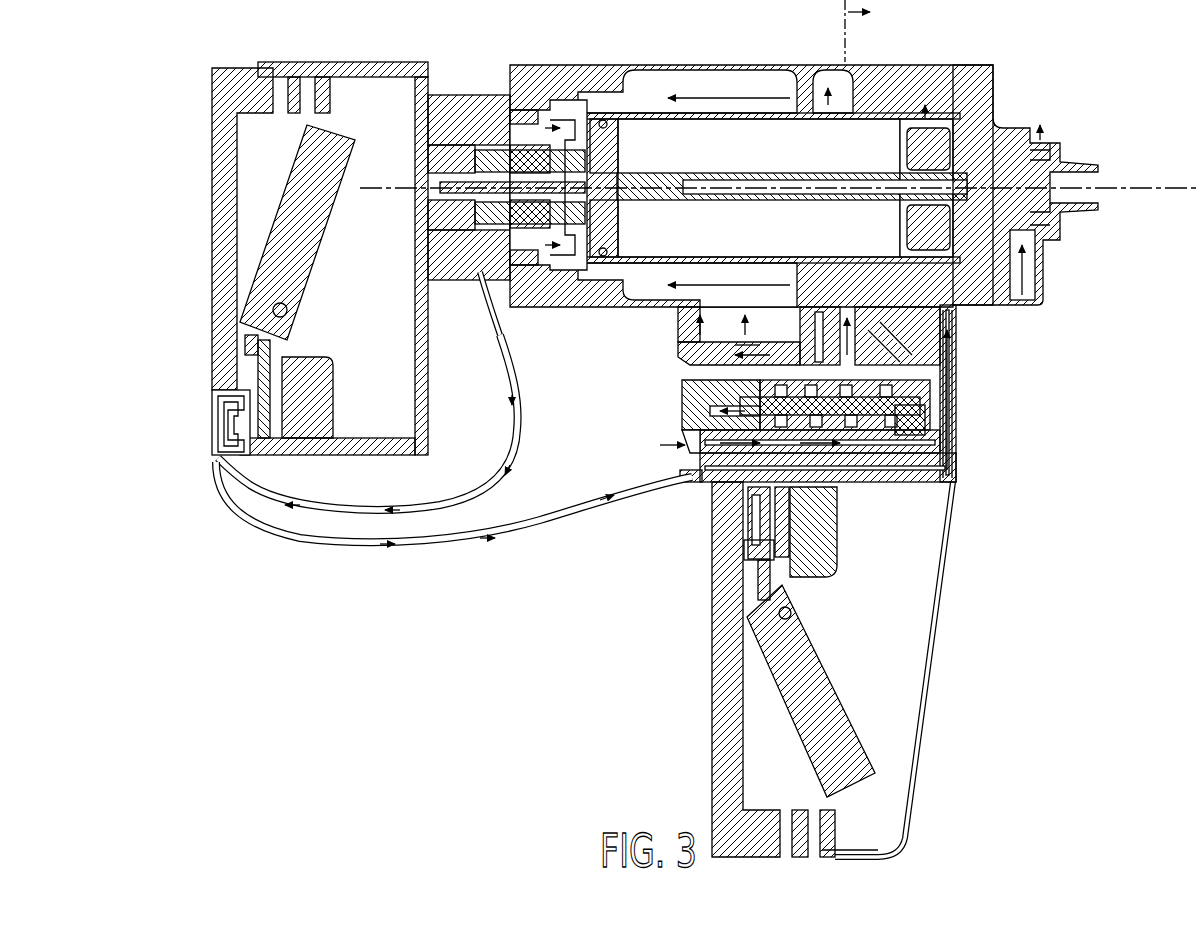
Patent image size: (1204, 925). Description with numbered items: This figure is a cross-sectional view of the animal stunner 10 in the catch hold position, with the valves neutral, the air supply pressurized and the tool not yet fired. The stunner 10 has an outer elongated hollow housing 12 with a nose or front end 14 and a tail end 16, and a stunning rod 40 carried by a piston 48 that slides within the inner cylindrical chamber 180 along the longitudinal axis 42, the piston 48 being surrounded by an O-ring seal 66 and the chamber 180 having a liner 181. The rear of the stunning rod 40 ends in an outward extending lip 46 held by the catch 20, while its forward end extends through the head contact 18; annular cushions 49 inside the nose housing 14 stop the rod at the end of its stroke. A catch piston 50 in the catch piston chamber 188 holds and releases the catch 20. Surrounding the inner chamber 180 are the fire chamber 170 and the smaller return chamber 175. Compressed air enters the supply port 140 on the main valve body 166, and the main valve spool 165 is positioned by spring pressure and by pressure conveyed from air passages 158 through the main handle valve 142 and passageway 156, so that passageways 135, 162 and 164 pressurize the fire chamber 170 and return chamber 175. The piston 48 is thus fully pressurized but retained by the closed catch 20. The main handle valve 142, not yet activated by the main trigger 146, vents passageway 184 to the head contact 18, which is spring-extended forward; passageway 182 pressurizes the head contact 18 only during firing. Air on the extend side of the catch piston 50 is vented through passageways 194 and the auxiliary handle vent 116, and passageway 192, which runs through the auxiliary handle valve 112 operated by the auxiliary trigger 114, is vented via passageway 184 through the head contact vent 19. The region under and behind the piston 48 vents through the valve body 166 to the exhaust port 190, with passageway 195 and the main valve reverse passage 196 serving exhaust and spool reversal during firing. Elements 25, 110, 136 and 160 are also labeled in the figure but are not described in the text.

The animal stunner 10 is at (1128, 100).
The outer elongated hollow housing 12 is at (735, 63).
The outer housing nose 14 is at (993, 90).
The tail end 16 is at (462, 95).
The head contact 18 is at (1084, 226).
The head contact vent 19 is at (1062, 148).
The catch 20 is at (465, 155).
The section line 25 is at (871, 31).
The stunning rod 40 is at (755, 172).
The longitudinal axis 42 is at (408, 196).
The stunning rod lip 46 is at (560, 179).
The piston 48 is at (618, 150).
The annular cushions 49 is at (920, 126).
The catch piston 50 is at (505, 110).
The O-ring seal 66 is at (603, 119).
The rear magazine housing 110 is at (208, 262).
The auxiliary handle valve 112 is at (270, 432).
The auxiliary trigger 114 is at (305, 272).
The auxiliary handle vent 116 is at (240, 425).
The passageway 135 is at (820, 455).
The handle 136 is at (718, 718).
The supply port 140 is at (692, 440).
The main handle valve 142 is at (792, 598).
The main trigger 146 is at (850, 700).
The passageway 156 is at (745, 490).
The air passages 158 is at (740, 512).
The trigger valve body 160 is at (745, 532).
The passageway 162 is at (855, 318).
The passageway 164 is at (905, 322).
The main valve spool 165 is at (940, 432).
The main valve body 166 is at (688, 393).
The fire chamber 170 is at (695, 76).
The return chamber 175 is at (825, 72).
The inner cylindrical chamber 180 is at (710, 159).
The liner 181 is at (812, 180).
The passageway 182 is at (935, 415).
The passageway 184 is at (905, 484).
The catch piston chamber 188 is at (481, 282).
The exhaust port 190 is at (690, 362).
The passageway 192 is at (514, 532).
The passageways 194 is at (520, 425).
The passageway 195 is at (893, 256).
The main valve reverse passage 196 is at (925, 358).